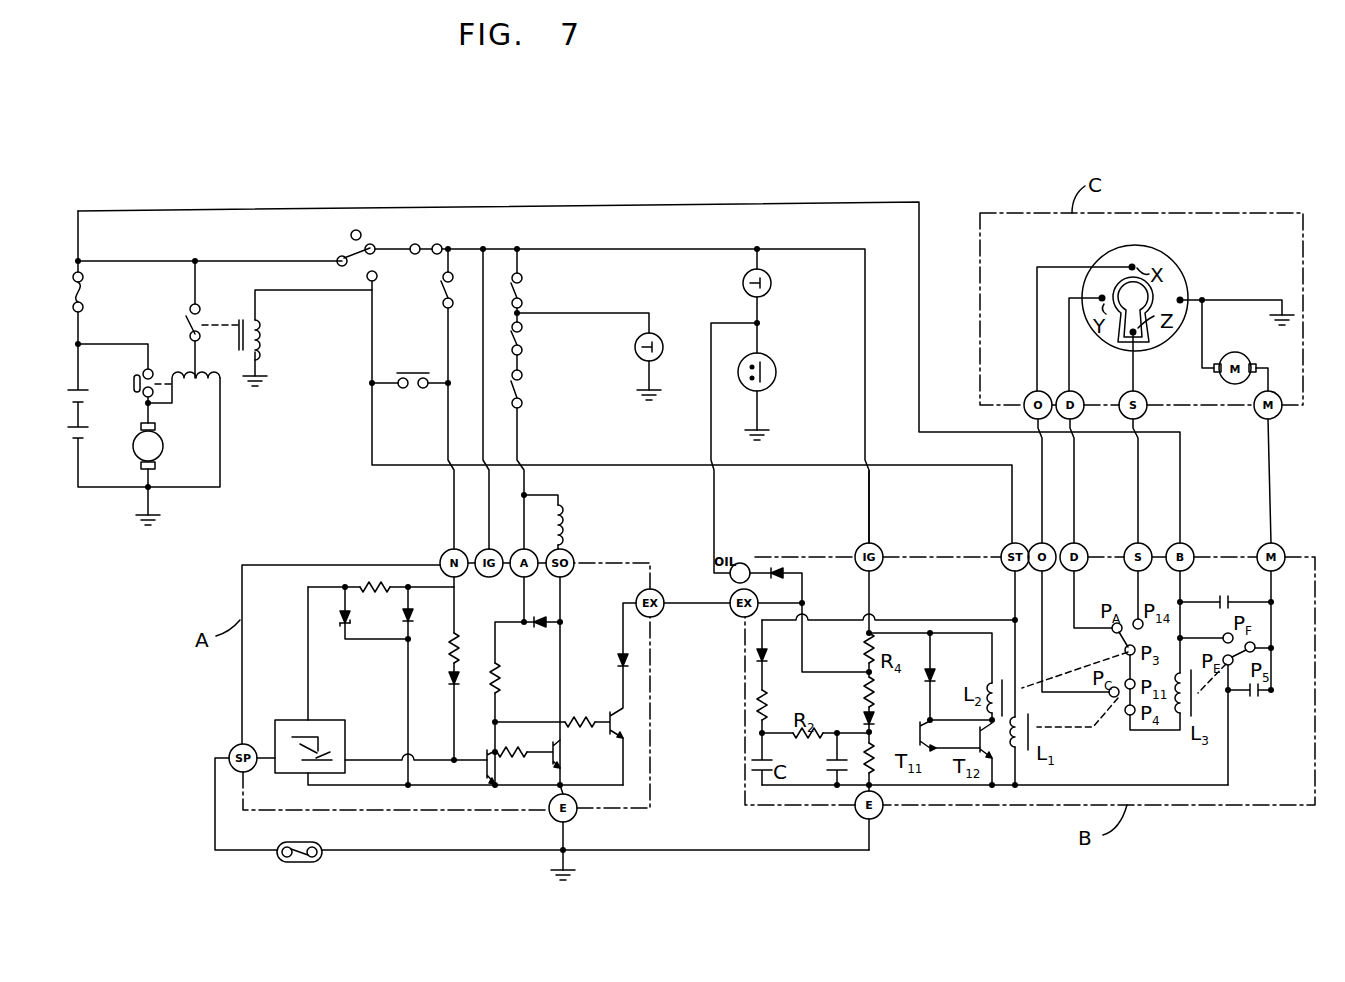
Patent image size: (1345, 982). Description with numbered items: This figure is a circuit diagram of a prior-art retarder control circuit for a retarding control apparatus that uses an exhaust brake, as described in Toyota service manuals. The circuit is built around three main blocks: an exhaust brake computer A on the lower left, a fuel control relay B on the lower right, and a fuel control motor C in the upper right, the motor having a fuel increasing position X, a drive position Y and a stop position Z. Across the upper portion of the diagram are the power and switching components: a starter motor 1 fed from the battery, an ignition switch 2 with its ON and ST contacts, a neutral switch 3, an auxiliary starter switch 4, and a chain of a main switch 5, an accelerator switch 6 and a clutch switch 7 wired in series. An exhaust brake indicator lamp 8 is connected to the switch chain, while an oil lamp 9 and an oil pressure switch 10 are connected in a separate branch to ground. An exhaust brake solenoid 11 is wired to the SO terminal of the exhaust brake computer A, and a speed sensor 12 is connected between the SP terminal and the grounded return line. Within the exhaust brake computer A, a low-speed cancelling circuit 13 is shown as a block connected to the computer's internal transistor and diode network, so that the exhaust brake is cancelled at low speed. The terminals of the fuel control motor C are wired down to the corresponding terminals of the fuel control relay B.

The starter motor 1 is at (165, 447).
The ignition switch 2 is at (336, 239).
The neutral switch 3 is at (423, 306).
The auxiliary starter switch 4 is at (414, 368).
The main switch 5 is at (534, 298).
The accelerator switch 6 is at (534, 354).
The clutch switch 7 is at (534, 402).
The exhaust brake indicator lamp 8 is at (660, 338).
The oil lamp 9 is at (772, 280).
The oil pressure switch 10 is at (777, 372).
The exhaust brake solenoid 11 is at (566, 522).
The speed sensor 12 is at (306, 867).
The low-speed cancelling circuit 13 is at (333, 720).